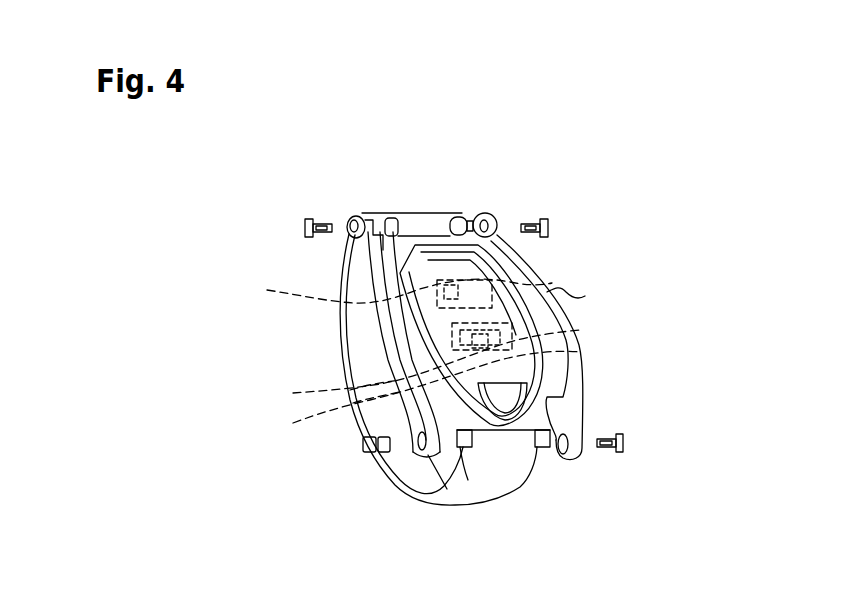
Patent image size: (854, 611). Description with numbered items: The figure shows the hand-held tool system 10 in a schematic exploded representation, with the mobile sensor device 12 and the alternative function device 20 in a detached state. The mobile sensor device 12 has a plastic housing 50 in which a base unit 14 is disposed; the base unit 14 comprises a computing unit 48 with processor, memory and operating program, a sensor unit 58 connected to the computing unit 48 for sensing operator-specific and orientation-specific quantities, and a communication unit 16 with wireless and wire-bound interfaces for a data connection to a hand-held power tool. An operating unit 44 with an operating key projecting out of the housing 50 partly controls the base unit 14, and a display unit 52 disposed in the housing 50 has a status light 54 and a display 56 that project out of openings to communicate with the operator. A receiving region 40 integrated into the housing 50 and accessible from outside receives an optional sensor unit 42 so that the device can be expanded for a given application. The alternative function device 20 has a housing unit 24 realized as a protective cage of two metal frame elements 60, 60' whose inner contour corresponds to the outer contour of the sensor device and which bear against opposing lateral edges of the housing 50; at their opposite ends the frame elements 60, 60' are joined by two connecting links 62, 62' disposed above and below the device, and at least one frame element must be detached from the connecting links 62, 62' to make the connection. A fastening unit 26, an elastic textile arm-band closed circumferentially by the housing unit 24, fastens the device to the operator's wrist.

The hand-held tool system 10 is at (613, 210).
The mobile sensor device 12 is at (393, 280).
The base unit 14 is at (580, 327).
The communication unit 16 is at (578, 352).
The alternative function device 20 is at (246, 376).
The housing unit 24 is at (345, 339).
The fastening unit 26 is at (419, 478).
The receiving region 40 is at (556, 277).
The optional sensor unit 42 is at (396, 290).
The operating unit 44 is at (573, 400).
The computing unit 48 is at (353, 403).
The housing 50 is at (453, 245).
The display unit 52 is at (432, 243).
The status light 54 is at (481, 263).
The display 56 is at (577, 373).
The sensor unit 58 is at (350, 390).
The frame element 60 is at (333, 336).
The frame element 60' is at (595, 285).
The connecting link 62 is at (383, 189).
The connecting link 62' is at (511, 482).